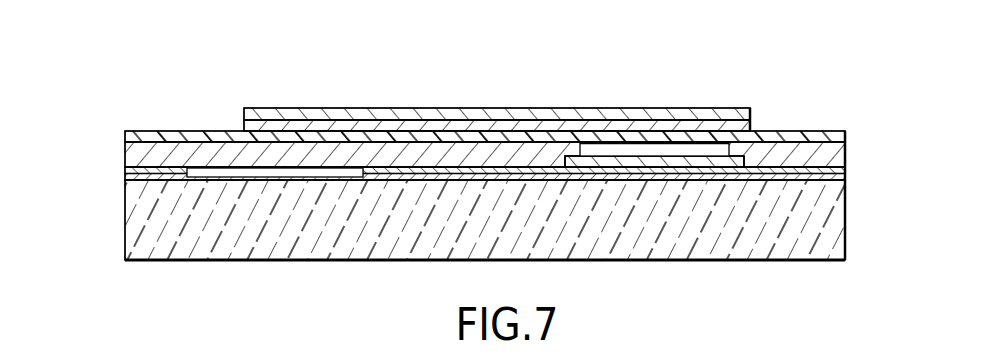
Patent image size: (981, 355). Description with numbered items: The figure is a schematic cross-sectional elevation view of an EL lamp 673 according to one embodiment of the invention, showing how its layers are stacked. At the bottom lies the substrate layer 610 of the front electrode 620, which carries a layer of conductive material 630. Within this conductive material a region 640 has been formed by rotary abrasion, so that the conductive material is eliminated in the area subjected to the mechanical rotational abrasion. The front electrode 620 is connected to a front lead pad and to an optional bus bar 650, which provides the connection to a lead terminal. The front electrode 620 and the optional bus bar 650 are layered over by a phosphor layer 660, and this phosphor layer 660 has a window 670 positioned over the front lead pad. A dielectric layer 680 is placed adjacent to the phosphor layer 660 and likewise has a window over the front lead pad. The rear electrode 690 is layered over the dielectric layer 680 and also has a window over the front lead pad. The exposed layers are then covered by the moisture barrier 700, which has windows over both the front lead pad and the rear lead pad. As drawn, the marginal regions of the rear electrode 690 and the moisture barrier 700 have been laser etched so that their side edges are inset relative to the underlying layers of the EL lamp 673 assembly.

The substrate layer 610 is at (668, 255).
The front electrode 620 is at (847, 183).
The layer of conductive material 630 is at (847, 170).
The region 640 is at (198, 175).
The optional bus bar 650 is at (683, 160).
The phosphor layer 660 is at (135, 160).
The window 670 is at (620, 148).
The dielectric layer 680 is at (160, 133).
The rear electrode 690 is at (247, 123).
The moisture barrier 700 is at (527, 107).
The EL lamp 673 is at (391, 76).